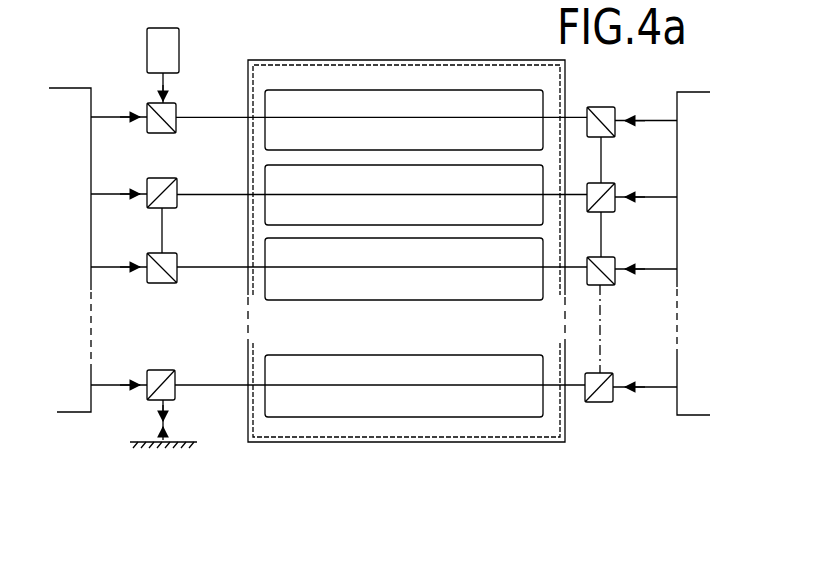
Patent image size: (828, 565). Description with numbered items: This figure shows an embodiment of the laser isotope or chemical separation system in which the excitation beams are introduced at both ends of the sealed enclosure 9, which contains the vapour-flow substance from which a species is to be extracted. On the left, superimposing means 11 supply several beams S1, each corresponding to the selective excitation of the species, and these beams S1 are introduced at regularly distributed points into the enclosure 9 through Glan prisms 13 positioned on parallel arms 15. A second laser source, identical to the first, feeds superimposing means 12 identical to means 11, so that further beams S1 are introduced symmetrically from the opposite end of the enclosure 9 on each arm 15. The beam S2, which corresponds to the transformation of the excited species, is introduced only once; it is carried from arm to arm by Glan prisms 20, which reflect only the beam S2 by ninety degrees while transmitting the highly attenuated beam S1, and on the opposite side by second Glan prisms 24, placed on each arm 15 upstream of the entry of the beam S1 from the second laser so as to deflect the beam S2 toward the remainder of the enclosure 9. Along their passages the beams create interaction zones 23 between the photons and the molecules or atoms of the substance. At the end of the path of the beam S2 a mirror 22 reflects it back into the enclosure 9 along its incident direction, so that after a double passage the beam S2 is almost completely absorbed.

The sealed enclosure 9 is at (272, 443).
The superimposing means 11 is at (78, 409).
The superimposing means 12 is at (697, 410).
The Glan prism 13 is at (172, 135).
The parallel arm 15 is at (574, 115).
The Glan prism 20 is at (176, 207).
The mirror 22 is at (154, 462).
The interaction zone 23 is at (404, 253).
The second Glan prism 24 is at (607, 107).
The beam S1 is at (108, 120).
The beam S2 is at (165, 80).